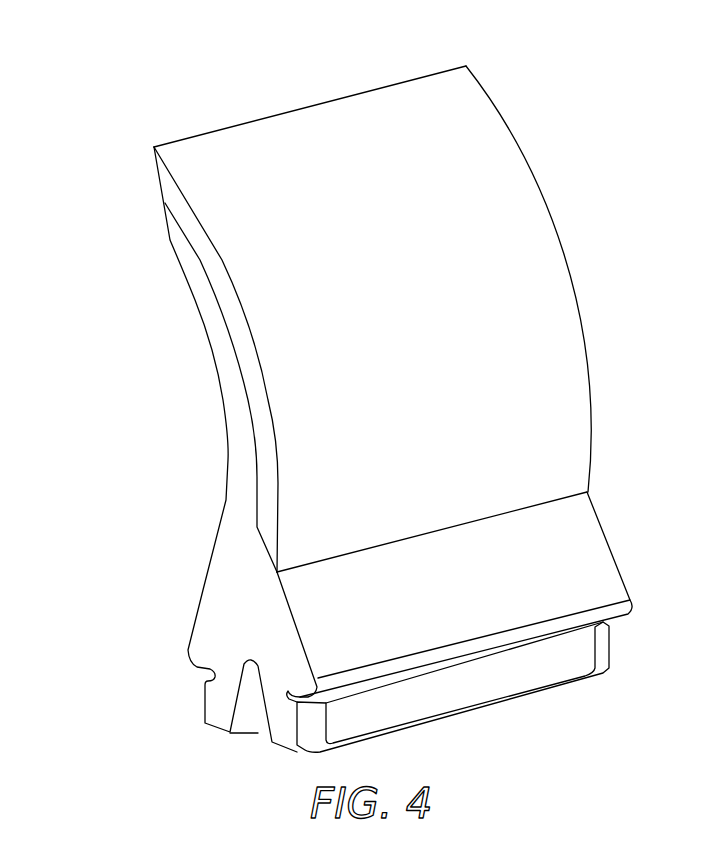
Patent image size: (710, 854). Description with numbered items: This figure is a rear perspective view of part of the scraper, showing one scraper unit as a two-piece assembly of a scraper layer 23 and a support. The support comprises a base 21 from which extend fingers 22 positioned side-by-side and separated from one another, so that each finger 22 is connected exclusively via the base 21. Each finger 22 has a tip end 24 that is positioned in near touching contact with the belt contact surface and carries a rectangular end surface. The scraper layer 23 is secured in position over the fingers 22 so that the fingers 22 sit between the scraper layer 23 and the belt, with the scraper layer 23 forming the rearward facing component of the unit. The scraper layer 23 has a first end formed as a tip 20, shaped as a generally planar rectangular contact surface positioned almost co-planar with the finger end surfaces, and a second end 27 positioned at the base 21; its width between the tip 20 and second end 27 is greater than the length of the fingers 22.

The tip 20 is at (313, 105).
The base 21 is at (598, 540).
The finger 22 is at (228, 404).
The scraper layer 23 is at (547, 197).
The tip end 24 is at (166, 220).
The second end 27 is at (437, 532).